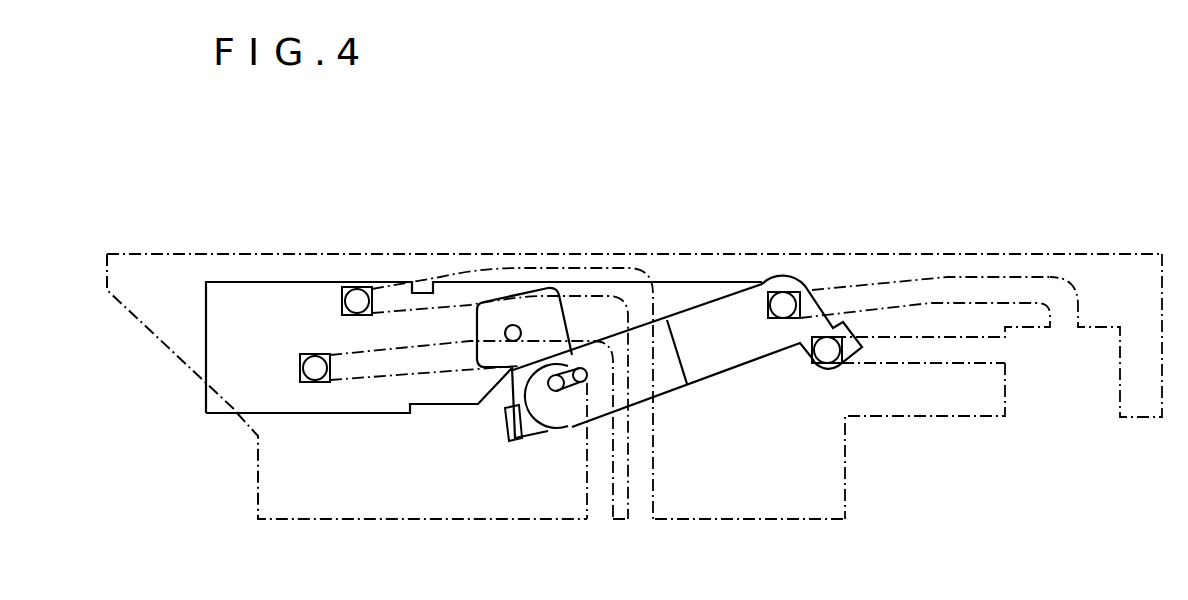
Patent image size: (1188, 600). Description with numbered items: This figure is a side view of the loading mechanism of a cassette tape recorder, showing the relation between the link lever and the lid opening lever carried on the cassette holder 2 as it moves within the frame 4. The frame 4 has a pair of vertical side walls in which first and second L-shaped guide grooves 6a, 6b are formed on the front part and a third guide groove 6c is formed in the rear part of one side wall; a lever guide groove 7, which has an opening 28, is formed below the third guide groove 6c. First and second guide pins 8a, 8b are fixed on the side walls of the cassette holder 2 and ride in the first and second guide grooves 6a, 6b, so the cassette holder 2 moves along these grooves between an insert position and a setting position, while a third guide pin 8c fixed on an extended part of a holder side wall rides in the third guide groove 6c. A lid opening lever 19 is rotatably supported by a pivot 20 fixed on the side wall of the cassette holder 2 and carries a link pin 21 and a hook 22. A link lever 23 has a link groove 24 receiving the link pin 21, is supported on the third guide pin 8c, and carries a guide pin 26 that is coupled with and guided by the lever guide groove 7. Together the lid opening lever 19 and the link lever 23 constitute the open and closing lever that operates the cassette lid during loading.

The cassette holder 2 is at (237, 407).
The frame 4 is at (264, 274).
The first L-shaped guide groove 6a is at (368, 376).
The second L-shaped guide groove 6b is at (652, 282).
The third guide groove 6c is at (930, 278).
The lever guide groove 7 is at (917, 360).
The first guide pin 8a is at (313, 374).
The second guide pin 8b is at (357, 296).
The third guide pin 8c is at (783, 303).
The lid opening lever 19 is at (537, 432).
The pivot 20 is at (513, 327).
The link pin 21 is at (510, 390).
The hook 22 is at (505, 428).
The link lever 23 is at (740, 358).
The link groove 24 is at (560, 385).
The guide pin 26 is at (828, 352).
The opening 28 is at (1110, 340).